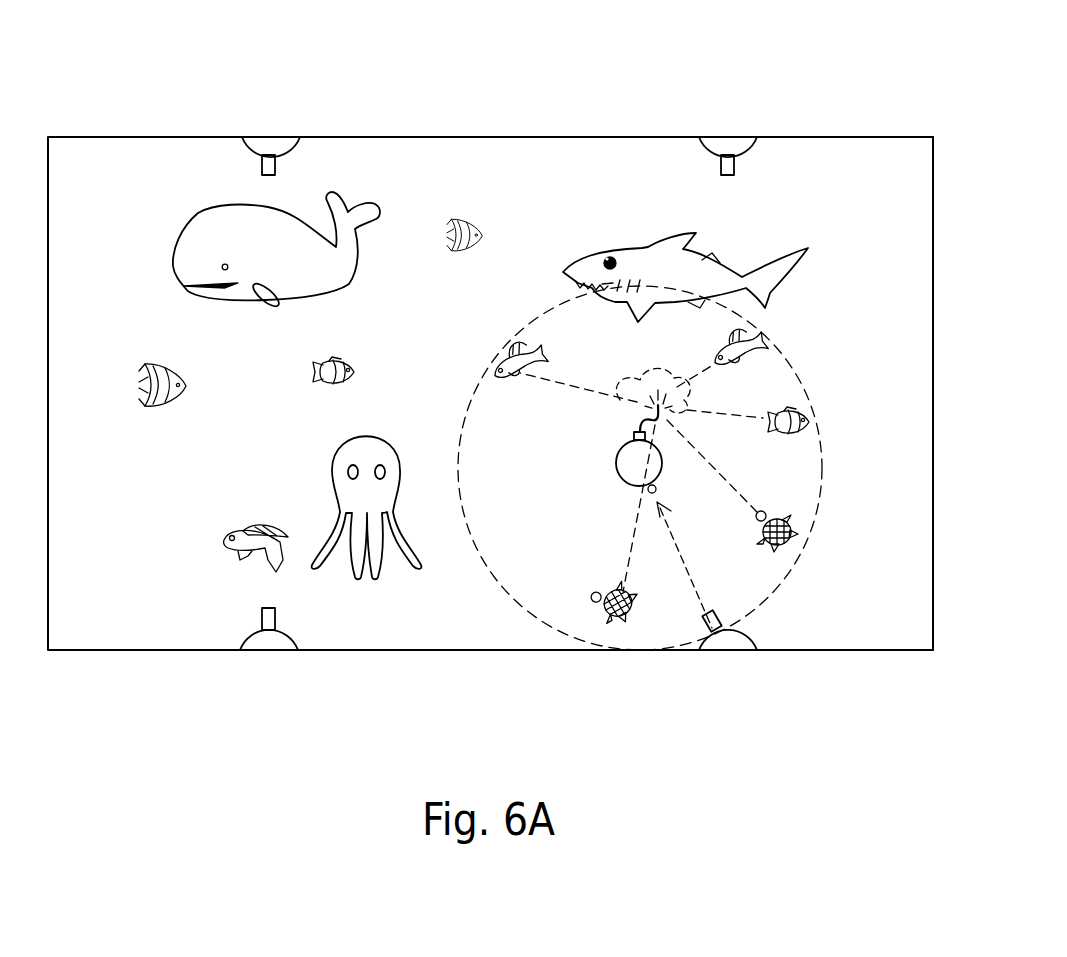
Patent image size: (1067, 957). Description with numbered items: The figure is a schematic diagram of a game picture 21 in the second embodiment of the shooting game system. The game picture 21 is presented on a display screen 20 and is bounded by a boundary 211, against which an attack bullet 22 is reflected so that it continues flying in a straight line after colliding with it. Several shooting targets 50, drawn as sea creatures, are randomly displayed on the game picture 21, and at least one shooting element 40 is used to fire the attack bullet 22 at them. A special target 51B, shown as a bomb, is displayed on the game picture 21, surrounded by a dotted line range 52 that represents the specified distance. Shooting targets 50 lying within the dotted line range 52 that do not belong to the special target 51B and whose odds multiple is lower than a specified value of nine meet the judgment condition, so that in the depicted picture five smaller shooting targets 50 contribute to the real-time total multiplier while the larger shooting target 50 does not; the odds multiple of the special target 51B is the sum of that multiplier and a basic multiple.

The display screen 20 is at (937, 136).
The game picture 21 is at (913, 298).
The boundary 211 is at (933, 527).
The attack bullet 22 is at (656, 492).
The shooting element 40 is at (727, 638).
The shooting target 50 is at (642, 257).
The special target 51B is at (637, 460).
The dotted line range 52 is at (823, 452).